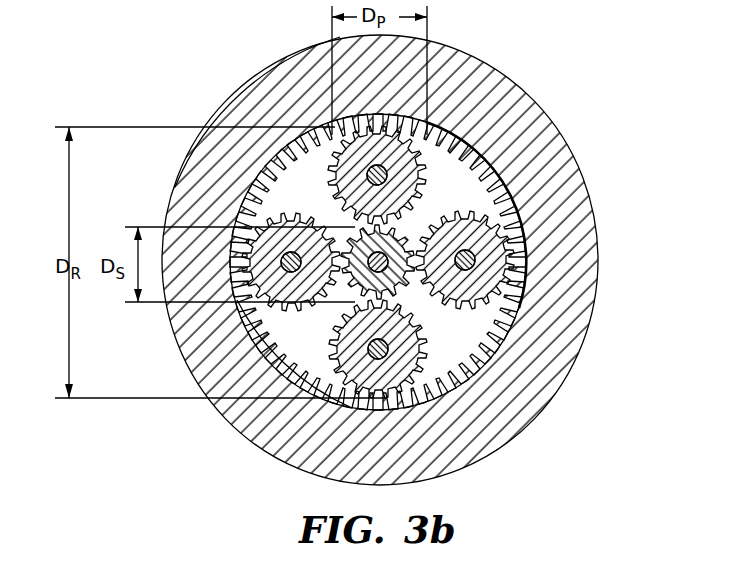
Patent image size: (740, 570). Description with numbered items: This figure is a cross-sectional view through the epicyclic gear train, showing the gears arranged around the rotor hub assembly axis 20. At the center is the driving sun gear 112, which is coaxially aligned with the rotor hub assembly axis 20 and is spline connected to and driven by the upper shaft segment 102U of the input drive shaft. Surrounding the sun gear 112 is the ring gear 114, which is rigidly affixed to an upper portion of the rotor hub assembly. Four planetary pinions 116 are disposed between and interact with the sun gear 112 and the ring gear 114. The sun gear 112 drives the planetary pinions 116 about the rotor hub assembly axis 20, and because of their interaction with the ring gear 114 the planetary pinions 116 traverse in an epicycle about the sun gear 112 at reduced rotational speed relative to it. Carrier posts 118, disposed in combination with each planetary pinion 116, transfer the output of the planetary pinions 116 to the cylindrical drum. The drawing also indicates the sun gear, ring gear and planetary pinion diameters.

The upper shaft segment 102U is at (477, 163).
The driving sun gear 112 is at (378, 226).
The rotor hub assembly axis 20 is at (378, 252).
The planetary pinions 116 is at (507, 291).
The carrier posts 118 is at (503, 340).
The ring gear 114 is at (467, 268).